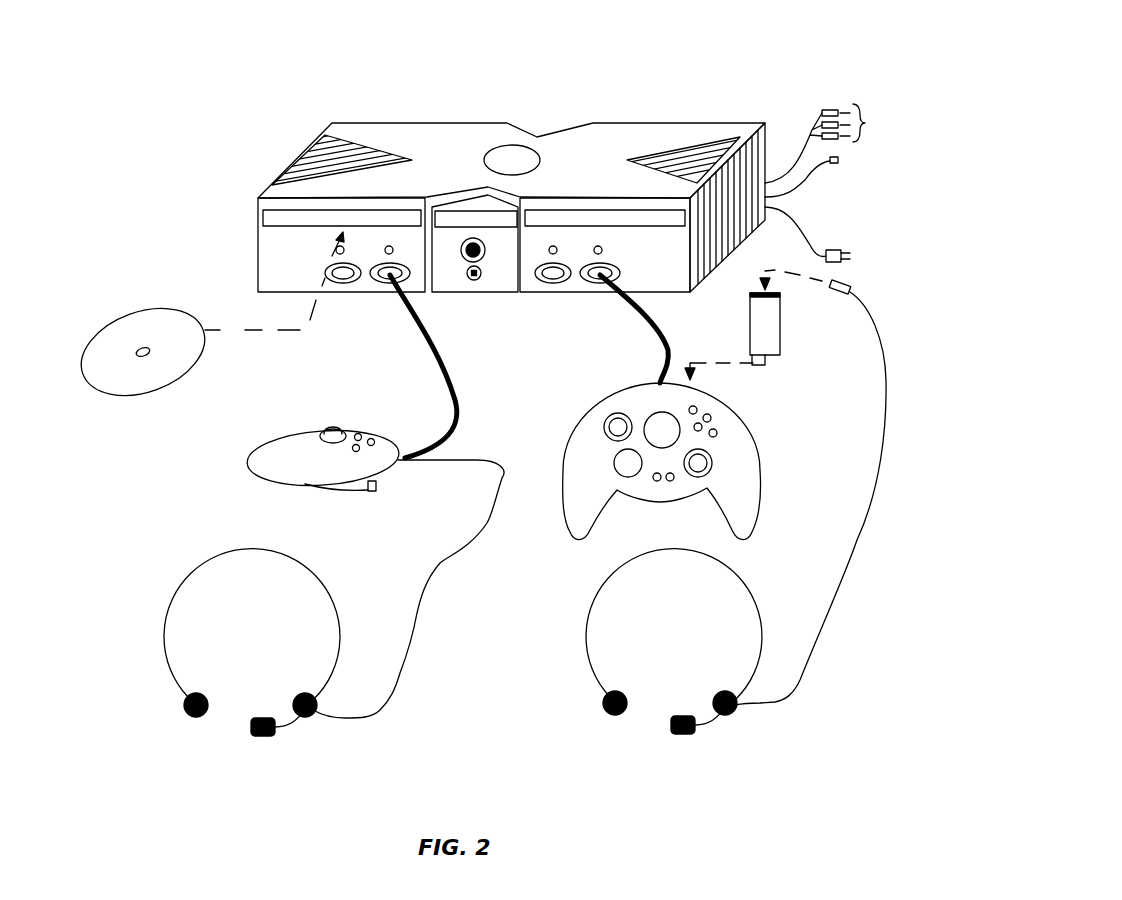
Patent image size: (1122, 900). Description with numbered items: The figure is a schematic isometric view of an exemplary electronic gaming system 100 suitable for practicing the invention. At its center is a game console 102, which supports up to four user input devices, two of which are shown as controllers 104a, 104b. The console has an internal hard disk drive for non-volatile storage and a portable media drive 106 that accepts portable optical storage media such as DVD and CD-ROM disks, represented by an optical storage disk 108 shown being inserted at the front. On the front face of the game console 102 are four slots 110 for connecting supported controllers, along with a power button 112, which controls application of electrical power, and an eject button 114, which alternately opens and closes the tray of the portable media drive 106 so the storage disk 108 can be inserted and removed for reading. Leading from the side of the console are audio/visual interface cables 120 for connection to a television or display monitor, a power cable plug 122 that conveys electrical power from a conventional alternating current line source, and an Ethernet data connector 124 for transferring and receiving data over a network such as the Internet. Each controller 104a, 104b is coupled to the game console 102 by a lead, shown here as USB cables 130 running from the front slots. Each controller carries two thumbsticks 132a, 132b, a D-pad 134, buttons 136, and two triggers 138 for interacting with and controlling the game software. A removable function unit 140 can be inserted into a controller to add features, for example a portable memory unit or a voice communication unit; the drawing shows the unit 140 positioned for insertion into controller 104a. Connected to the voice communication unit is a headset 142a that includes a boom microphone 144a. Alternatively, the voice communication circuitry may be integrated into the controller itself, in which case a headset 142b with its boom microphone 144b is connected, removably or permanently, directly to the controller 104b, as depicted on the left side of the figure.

The electronic gaming system 100 is at (658, 44).
The game console 102 is at (368, 123).
The controller 104a is at (577, 533).
The controller 104b is at (324, 490).
The portable media drive 106 is at (273, 217).
The optical storage disk 108 is at (157, 390).
The slots 110 is at (387, 284).
The power button 112 is at (475, 282).
The eject button 114 is at (473, 240).
The audio/visual (A/V) interface cables 120 is at (826, 110).
The power cable plug 122 is at (843, 251).
The Ethernet data connector 124 is at (802, 182).
The USB cables 130 is at (452, 375).
The thumbstick 132a is at (604, 427).
The thumbstick 132b is at (330, 425).
The D-pad 134 is at (614, 463).
The buttons 136 is at (707, 418).
The triggers 138 is at (372, 486).
The removable function unit 140 is at (780, 352).
The headset 142a is at (583, 662).
The headset 142b is at (162, 662).
The boom microphone 144a is at (682, 736).
The boom microphone 144b is at (262, 736).